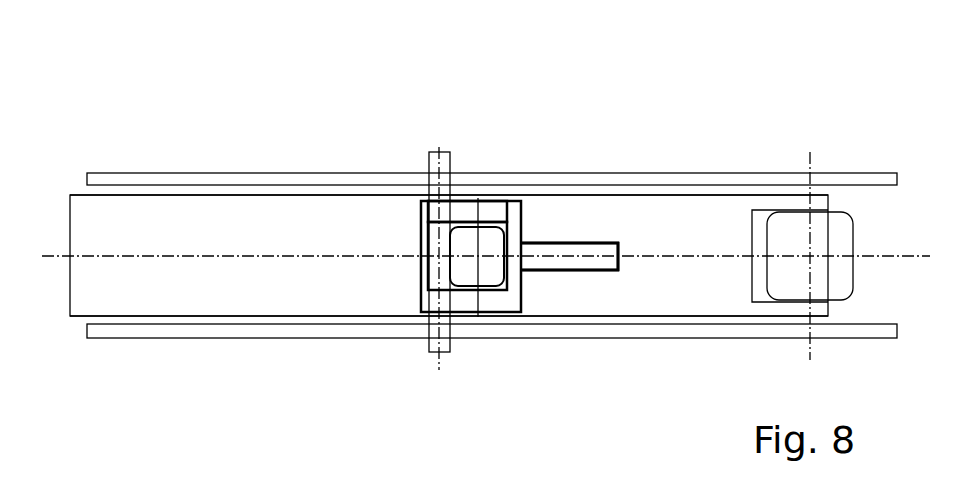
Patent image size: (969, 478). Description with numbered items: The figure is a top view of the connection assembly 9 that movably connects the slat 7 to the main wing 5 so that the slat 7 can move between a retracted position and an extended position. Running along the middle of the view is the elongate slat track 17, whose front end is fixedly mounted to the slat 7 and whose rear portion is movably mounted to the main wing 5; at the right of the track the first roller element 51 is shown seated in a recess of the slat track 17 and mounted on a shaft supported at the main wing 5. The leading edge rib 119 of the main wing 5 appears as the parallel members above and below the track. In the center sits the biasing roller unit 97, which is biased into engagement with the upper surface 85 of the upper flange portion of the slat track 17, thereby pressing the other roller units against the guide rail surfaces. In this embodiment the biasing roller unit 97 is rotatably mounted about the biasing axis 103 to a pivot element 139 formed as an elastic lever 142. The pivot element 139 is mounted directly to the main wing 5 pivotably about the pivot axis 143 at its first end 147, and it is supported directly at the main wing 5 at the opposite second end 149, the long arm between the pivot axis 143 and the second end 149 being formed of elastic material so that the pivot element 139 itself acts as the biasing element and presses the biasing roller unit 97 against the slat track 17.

The main wing 5 is at (722, 373).
The slat 7 is at (34, 270).
The connection assembly 9 is at (361, 100).
The slat track 17 is at (203, 298).
The first roller element 51 is at (845, 280).
The upper surface 85 is at (283, 207).
The biasing roller unit 97 is at (497, 278).
The biasing axis 103 is at (478, 210).
The leading edge rib 119 is at (181, 172).
The pivot element 139 is at (548, 245).
The elastic lever 142 is at (569, 256).
The pivot axis 143 is at (438, 148).
The first end 147 is at (430, 302).
The second end 149 is at (612, 248).